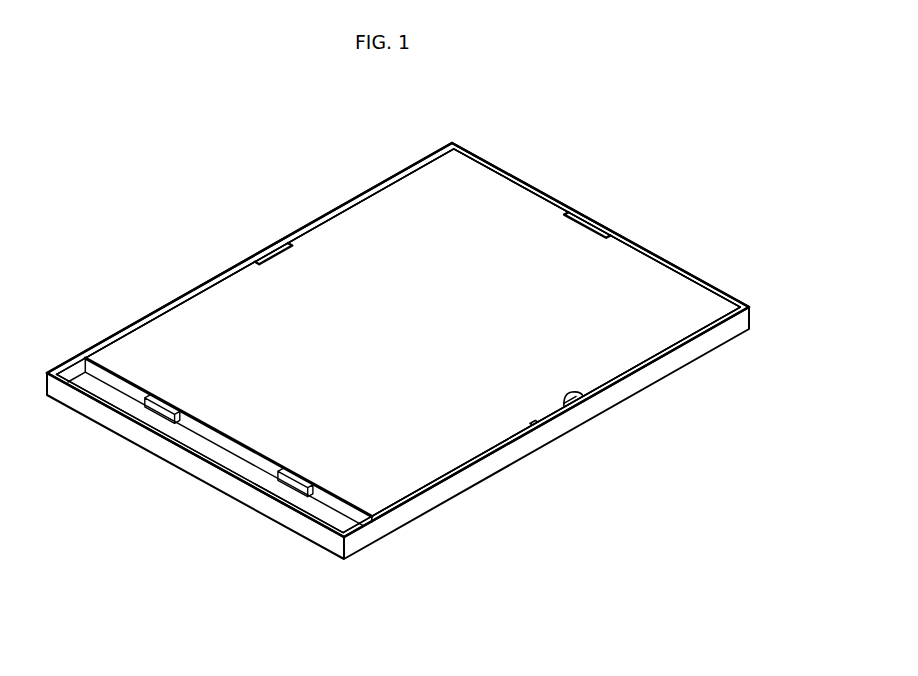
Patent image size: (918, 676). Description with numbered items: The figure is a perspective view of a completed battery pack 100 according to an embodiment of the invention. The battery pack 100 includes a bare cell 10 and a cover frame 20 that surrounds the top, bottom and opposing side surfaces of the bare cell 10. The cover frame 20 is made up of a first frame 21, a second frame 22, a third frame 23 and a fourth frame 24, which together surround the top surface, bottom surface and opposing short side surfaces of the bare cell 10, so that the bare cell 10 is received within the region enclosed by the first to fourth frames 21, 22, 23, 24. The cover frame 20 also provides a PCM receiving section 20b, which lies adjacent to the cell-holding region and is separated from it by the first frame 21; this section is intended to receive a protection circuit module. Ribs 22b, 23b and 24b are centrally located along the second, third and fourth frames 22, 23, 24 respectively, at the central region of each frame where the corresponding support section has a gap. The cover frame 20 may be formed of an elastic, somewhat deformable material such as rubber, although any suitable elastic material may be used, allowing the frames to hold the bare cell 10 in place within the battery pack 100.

The battery pack 100 is at (99, 194).
The bare cell 10 is at (398, 456).
The cover frame 20 is at (752, 311).
The PCM receiving section 20b is at (318, 512).
The first frame 21 is at (230, 447).
The second frame 22 is at (520, 182).
The rib 22b is at (593, 221).
The third frame 23 is at (346, 198).
The rib 23b is at (268, 249).
The fourth frame 24 is at (520, 447).
The rib 24b is at (593, 396).